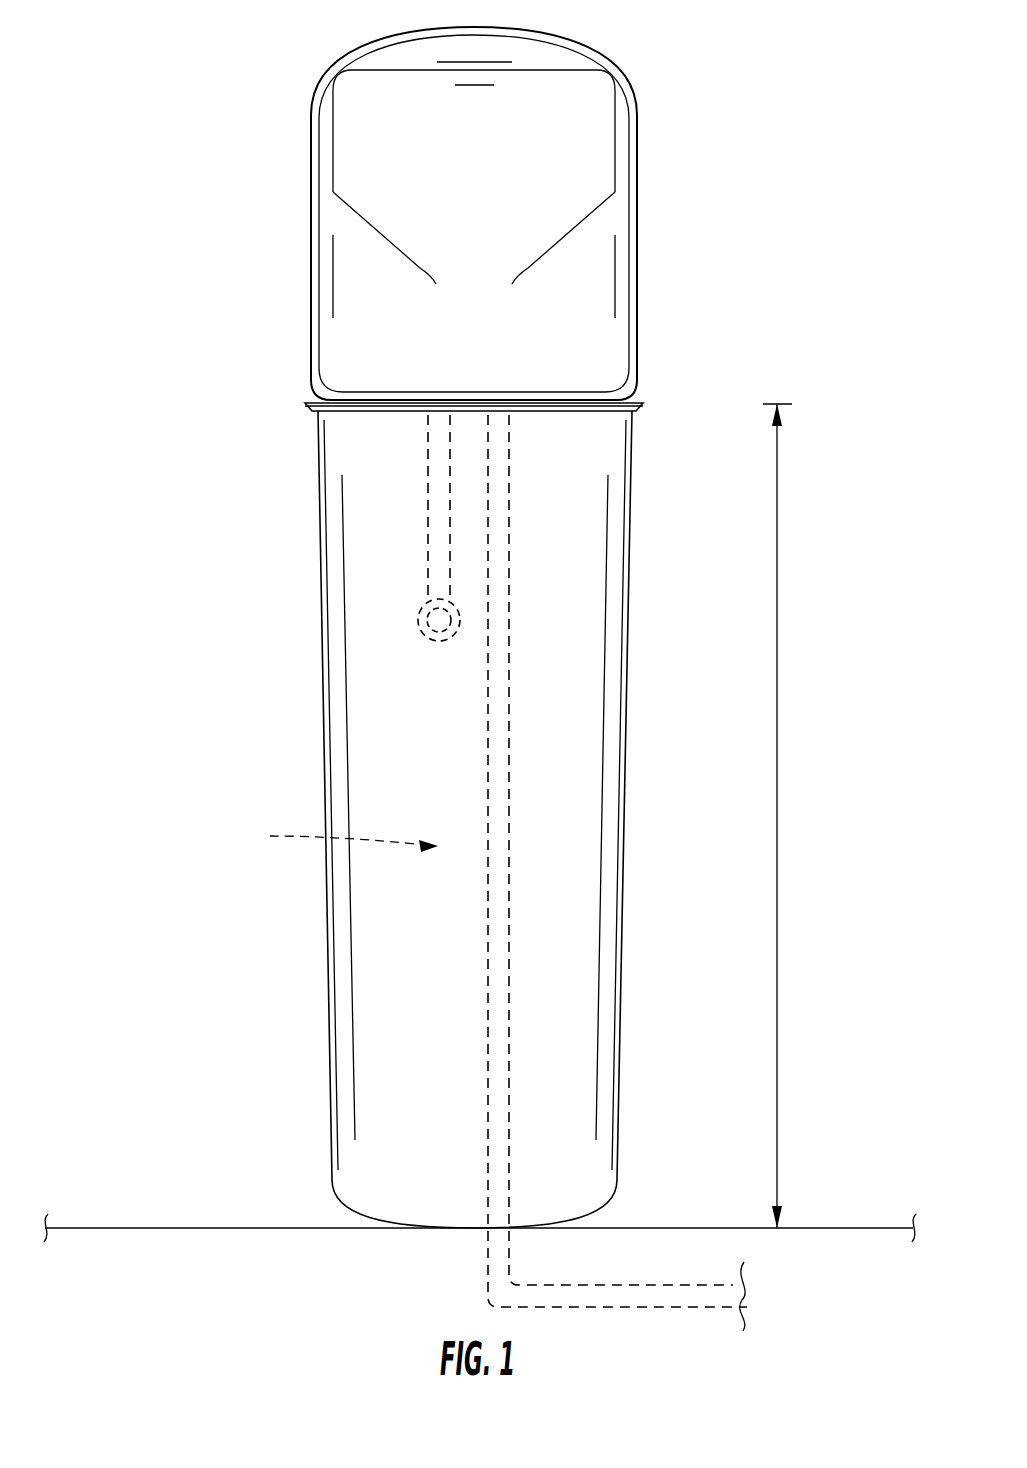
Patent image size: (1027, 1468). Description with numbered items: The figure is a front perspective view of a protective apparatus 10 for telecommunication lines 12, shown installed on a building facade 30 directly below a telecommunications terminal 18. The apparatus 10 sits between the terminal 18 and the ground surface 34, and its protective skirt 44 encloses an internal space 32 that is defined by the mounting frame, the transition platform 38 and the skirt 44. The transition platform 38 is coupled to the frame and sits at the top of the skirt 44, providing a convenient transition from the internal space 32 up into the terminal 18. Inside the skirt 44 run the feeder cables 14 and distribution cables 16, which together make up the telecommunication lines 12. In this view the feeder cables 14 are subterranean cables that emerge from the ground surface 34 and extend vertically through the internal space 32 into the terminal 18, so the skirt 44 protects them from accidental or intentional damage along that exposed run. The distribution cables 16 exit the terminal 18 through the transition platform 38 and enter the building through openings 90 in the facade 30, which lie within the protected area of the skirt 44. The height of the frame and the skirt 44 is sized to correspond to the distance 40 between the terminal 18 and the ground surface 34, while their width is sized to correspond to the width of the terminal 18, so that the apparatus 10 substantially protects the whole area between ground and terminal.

The protective apparatus 10 is at (148, 367).
The telecommunication lines 12 is at (428, 530).
The feeder cables 14 is at (509, 544).
The distribution cables 16 is at (428, 477).
The telecommunications terminal 18 is at (637, 264).
The building facade 30 is at (205, 652).
The internal space 32 is at (340, 837).
The ground surface 34 is at (822, 1228).
The transition platform 38 is at (640, 404).
The distance 40 is at (777, 818).
The protective skirt 44 is at (625, 808).
The openings 90 is at (418, 630).